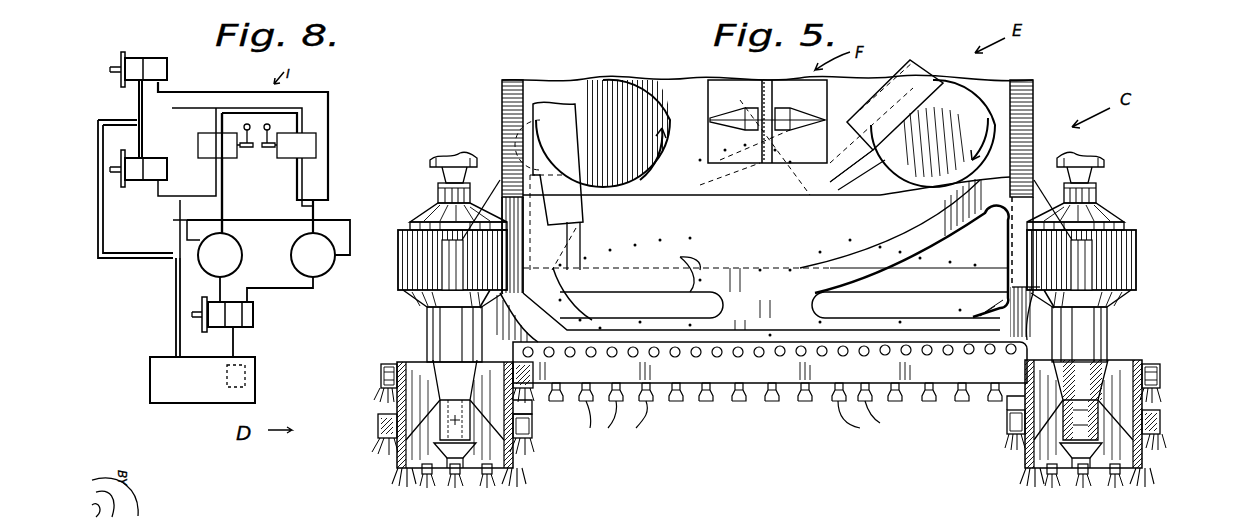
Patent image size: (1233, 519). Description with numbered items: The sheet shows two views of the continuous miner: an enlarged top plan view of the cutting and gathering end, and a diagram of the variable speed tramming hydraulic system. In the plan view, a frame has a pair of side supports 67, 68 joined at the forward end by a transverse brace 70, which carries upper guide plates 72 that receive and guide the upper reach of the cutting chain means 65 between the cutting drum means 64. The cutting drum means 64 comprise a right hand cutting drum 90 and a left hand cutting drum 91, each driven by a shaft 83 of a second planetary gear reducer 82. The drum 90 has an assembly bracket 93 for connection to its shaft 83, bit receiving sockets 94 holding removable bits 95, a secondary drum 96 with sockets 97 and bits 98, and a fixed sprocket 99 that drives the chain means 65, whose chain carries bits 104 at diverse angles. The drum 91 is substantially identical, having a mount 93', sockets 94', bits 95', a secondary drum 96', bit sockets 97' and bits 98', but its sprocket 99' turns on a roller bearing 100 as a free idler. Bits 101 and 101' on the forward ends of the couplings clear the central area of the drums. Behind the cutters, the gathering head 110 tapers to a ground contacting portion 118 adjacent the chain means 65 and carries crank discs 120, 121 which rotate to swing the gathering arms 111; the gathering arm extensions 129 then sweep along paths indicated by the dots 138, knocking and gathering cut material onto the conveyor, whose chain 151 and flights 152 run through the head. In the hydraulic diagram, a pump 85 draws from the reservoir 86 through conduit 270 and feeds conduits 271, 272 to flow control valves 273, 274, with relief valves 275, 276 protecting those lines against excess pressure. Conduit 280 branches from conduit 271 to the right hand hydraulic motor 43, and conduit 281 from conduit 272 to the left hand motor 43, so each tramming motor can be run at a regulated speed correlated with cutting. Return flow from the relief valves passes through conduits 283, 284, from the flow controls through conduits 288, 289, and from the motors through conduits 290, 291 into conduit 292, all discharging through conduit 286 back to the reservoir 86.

In FIG. 8, the hydraulic motor 43 is at (167, 70).
In FIG. 8, the conduit 290 is at (146, 115).
In FIG. 8, the conduit 291 is at (138, 101).
In FIG. 8, the conduit 289 is at (300, 118).
In FIG. 8, the conduit 288 is at (222, 122).
In FIG. 8, the conduit 281 is at (328, 176).
In FIG. 8, the flow control valve 273 is at (224, 152).
In FIG. 8, the flow control valve 274 is at (310, 143).
In FIG. 8, the conduit 280 is at (200, 186).
In FIG. 8, the conduit 272 is at (297, 188).
In FIG. 8, the conduit 292 is at (103, 230).
In FIG. 8, the conduit 286 is at (173, 240).
In FIG. 8, the conduit 283 is at (196, 228).
In FIG. 8, the conduit 271 is at (222, 208).
In FIG. 8, the conduit 284 is at (178, 275).
In FIG. 8, the relief valve 275 is at (238, 268).
In FIG. 8, the relief valve 276 is at (320, 278).
In FIG. 8, the second planetary gear reducer 82 is at (362, 261).
In FIG. 5, the second planetary gear reducer 82 is at (410, 262).
In FIG. 8, the pump 85 is at (253, 315).
In FIG. 8, the conduit 270 is at (236, 342).
In FIG. 8, the hydraulic fluid reservoir 86 is at (150, 383).
In FIG. 5, the side support 67 is at (502, 110).
In FIG. 5, the side support 68 is at (1033, 97).
In FIG. 5, the gathering head crank disc 120 is at (671, 108).
In FIG. 5, the gathering head 110 is at (666, 117).
In FIG. 5, the gathering head crank disc 121 is at (985, 70).
In FIG. 5, the gathering arms 111 is at (566, 64).
In FIG. 5, the chain 151 is at (750, 75).
In FIG. 5, the flights 152 is at (748, 92).
In FIG. 5, the gathering arm extension 129 is at (570, 246).
In FIG. 5, the upper guide plates 72 is at (756, 383).
In FIG. 5, the transverse brace 70 is at (929, 228).
In FIG. 5, the dots 138 is at (672, 234).
In FIG. 5, the ground contacting portion 118 is at (565, 332).
In FIG. 5, the bits 104 is at (690, 400).
In FIG. 5, the cutting chain means 65 is at (820, 411).
In FIG. 5, the shaft 83 is at (427, 340).
In FIG. 5, the right hand cutting drum 90 is at (403, 362).
In FIG. 5, the assembly bracket 93 is at (468, 390).
In FIG. 5, the bits 101 is at (452, 479).
In FIG. 5, the sprocket 99 is at (438, 382).
In FIG. 5, the secondary drum 96 is at (368, 434).
In FIG. 5, the bit receiving sockets 97 is at (540, 434).
In FIG. 5, the removable bits 98 is at (543, 428).
In FIG. 5, the bit receiving sockets 94 is at (453, 479).
In FIG. 5, the removable bits 95 is at (448, 489).
In FIG. 5, the cutting drum means 64 is at (357, 458).
In FIG. 5, the mount 93' is at (1096, 379).
In FIG. 5, the left hand cutting drum 91 is at (1115, 362).
In FIG. 5, the roller bearing 100 is at (1138, 357).
In FIG. 5, the bottom nozzle 101' is at (1081, 481).
In FIG. 5, the sprocket 99' is at (1170, 383).
In FIG. 5, the secondary drum 96' is at (1171, 417).
In FIG. 5, the bit sockets 97' is at (1078, 430).
In FIG. 5, the removable bits 98' is at (995, 430).
In FIG. 5, the bit receiving sockets 94' is at (1086, 478).
In FIG. 5, the removable bits 95' is at (1077, 486).